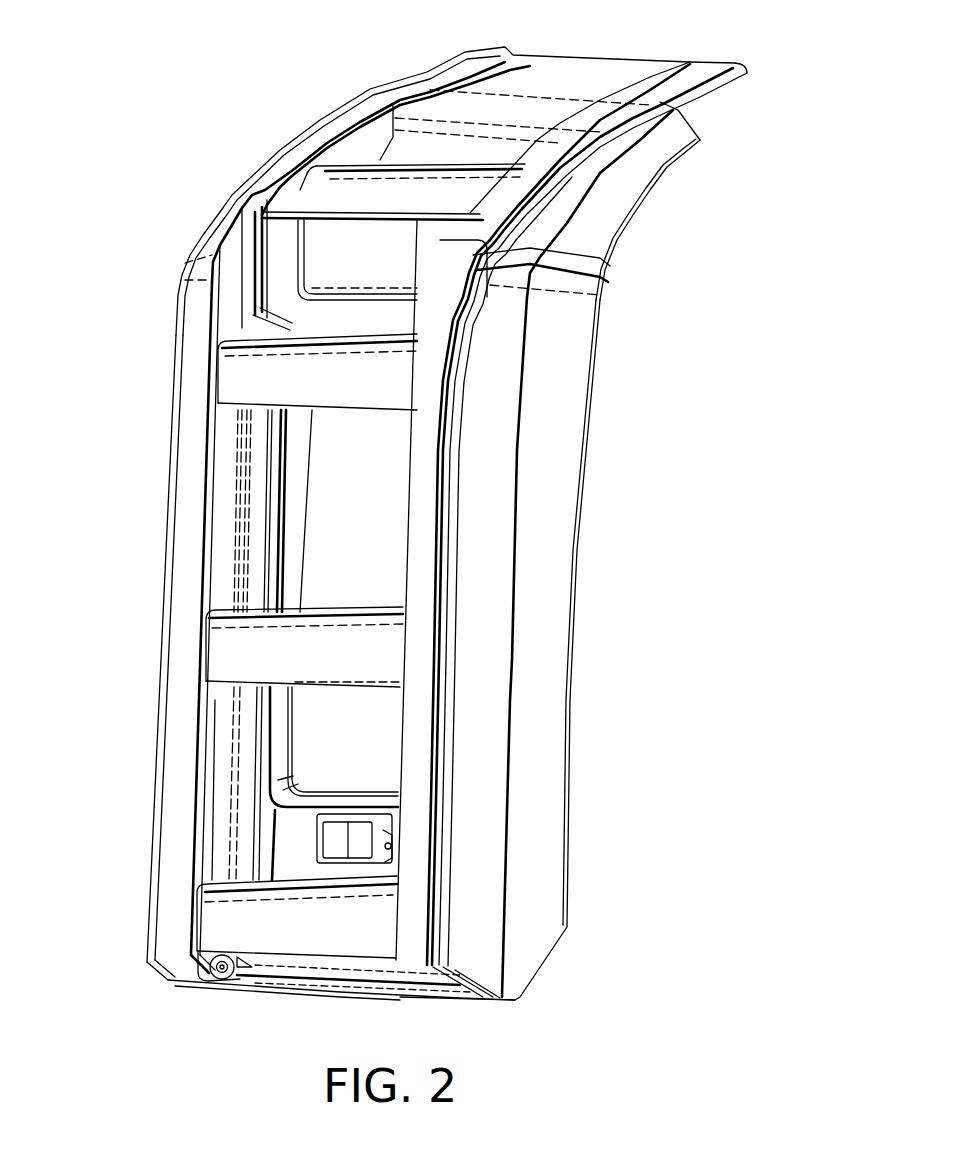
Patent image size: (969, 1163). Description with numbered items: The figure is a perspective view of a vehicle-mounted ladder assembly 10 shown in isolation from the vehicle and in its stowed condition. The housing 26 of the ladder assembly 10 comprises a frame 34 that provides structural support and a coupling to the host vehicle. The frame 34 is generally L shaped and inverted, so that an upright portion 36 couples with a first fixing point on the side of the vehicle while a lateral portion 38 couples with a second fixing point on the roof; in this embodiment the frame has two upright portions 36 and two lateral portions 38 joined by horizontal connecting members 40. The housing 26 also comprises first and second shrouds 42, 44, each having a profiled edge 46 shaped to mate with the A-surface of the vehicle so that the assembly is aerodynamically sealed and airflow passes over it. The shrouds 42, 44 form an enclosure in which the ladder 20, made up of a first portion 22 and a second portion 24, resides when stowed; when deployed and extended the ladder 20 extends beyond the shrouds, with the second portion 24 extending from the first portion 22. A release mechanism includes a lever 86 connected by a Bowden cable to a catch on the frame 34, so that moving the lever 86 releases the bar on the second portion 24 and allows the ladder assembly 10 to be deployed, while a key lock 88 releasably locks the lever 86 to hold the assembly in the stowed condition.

The ladder assembly 10 is at (140, 163).
The ladder 20 is at (148, 681).
The first portion 22 is at (247, 738).
The second portion 24 is at (213, 815).
The housing 26 is at (543, 842).
The frame 34 is at (270, 853).
The upright portion 36 is at (288, 557).
The lateral portion 38 is at (427, 72).
The horizontal connecting member 40 is at (322, 267).
The first shroud 42 is at (183, 248).
The second shroud 44 is at (563, 375).
The profiled edge 46 is at (637, 217).
The lever 86 is at (360, 813).
The key lock 88 is at (387, 840).